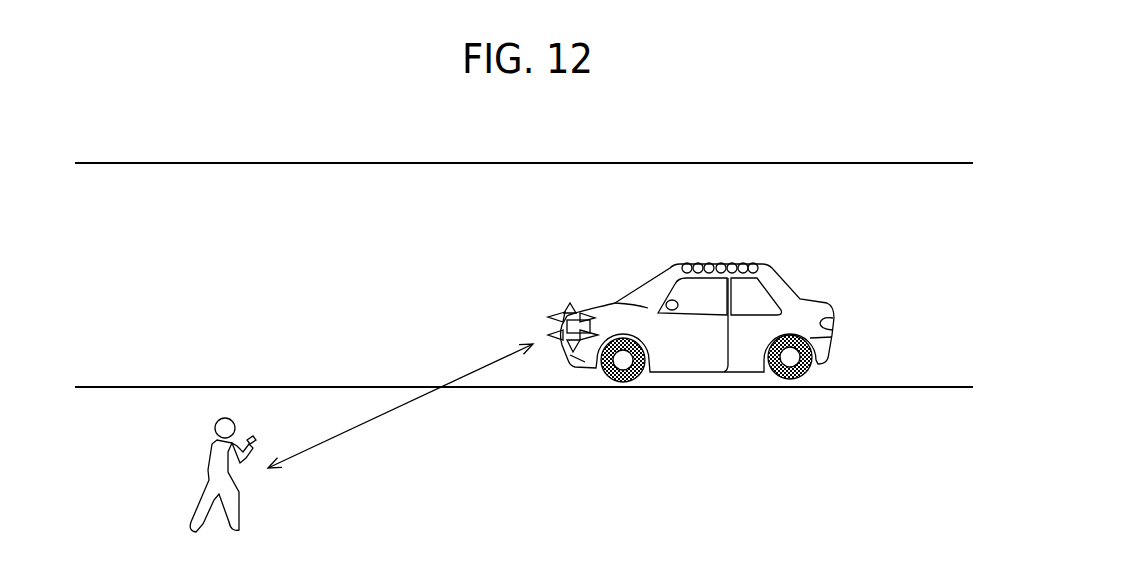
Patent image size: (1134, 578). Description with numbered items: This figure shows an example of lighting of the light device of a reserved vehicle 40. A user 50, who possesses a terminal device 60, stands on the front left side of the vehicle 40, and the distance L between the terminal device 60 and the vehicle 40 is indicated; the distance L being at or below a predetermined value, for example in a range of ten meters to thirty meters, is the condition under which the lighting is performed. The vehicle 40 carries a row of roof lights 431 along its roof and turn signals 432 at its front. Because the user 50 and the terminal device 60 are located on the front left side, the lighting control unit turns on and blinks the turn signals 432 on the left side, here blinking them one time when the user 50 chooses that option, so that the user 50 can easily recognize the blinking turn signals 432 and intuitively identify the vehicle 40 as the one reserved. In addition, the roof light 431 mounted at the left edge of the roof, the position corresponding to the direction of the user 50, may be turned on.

The vehicle 40 is at (833, 341).
The roof lights 431 is at (749, 262).
The turn signals 432 is at (567, 318).
The user 50 is at (208, 465).
The terminal device 60 is at (253, 432).
The distance L is at (375, 418).